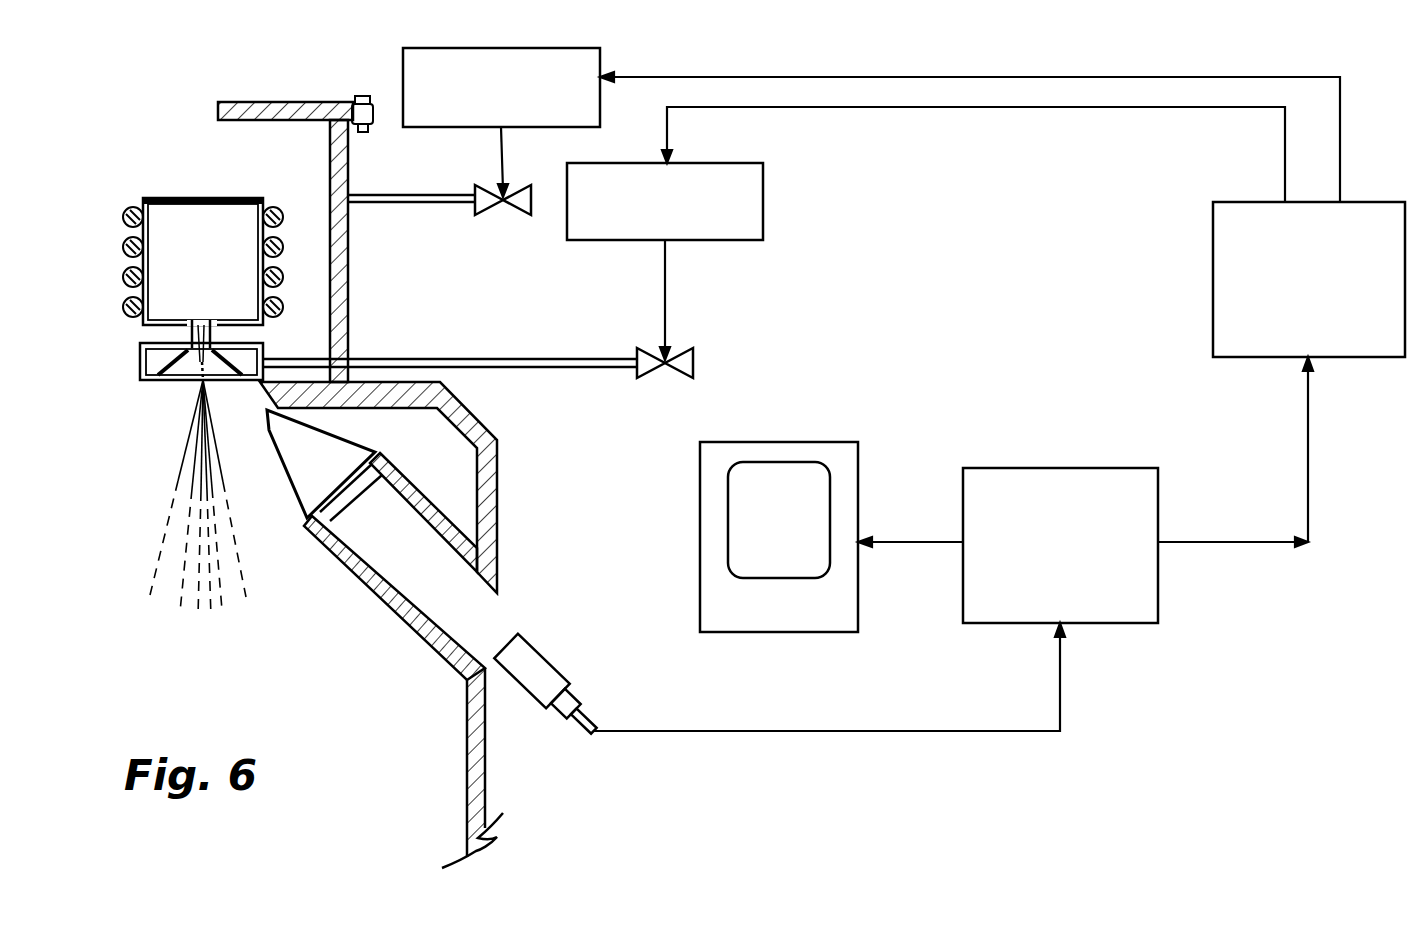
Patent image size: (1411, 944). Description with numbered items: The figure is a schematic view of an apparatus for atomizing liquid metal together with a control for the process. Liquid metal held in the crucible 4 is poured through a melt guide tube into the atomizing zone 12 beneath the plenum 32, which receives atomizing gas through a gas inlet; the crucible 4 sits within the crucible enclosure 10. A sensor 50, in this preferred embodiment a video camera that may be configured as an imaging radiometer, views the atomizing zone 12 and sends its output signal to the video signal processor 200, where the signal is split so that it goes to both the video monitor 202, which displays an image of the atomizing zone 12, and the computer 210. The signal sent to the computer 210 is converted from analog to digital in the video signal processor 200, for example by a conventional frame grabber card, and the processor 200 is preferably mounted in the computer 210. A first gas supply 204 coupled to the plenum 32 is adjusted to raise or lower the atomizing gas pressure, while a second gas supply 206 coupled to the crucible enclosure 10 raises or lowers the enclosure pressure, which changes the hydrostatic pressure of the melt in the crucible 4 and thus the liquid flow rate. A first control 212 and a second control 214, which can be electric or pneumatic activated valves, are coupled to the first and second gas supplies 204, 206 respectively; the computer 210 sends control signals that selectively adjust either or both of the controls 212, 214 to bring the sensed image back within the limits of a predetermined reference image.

The crucible 4 is at (258, 198).
The crucible enclosure 10 is at (349, 281).
The atomizing zone 12 is at (198, 385).
The plenum 32 is at (140, 363).
The sensor 50 is at (541, 648).
The video signal processor 200 is at (1160, 496).
The video monitor 202 is at (860, 454).
The first gas supply 204 is at (696, 366).
The second gas supply 206 is at (522, 212).
The computer 210 is at (1213, 262).
The first control 212 is at (765, 172).
The second control 214 is at (602, 60).